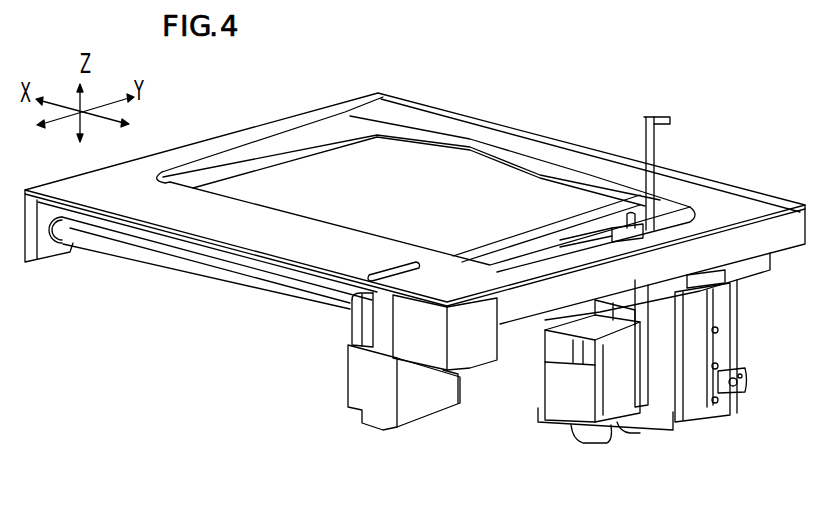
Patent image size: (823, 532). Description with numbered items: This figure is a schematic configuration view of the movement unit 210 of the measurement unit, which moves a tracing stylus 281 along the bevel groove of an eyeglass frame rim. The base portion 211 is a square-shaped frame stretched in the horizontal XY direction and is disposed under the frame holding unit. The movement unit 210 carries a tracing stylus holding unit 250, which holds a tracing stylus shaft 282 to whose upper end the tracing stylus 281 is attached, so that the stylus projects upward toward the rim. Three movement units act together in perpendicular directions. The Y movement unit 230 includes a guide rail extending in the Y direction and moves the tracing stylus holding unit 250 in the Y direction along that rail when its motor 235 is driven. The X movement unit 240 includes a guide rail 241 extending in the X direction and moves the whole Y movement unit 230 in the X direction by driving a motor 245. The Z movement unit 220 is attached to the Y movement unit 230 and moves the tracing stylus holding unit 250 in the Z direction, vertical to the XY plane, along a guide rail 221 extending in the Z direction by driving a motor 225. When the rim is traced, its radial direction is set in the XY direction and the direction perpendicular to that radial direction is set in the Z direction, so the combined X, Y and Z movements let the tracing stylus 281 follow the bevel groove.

The movement unit 210 is at (543, 126).
The base portion 211 is at (471, 116).
The Z movement unit 220 is at (660, 446).
The guide rail 221 is at (697, 397).
The motor 225 is at (558, 404).
The Y movement unit 230 is at (483, 237).
The motor 235 is at (373, 390).
The X movement unit 240 is at (213, 325).
The guide rail 241 is at (123, 230).
The motor 245 is at (467, 353).
The tracing stylus holding unit 250 is at (667, 218).
The tracing stylus 281 is at (657, 117).
The tracing stylus shaft 282 is at (645, 158).